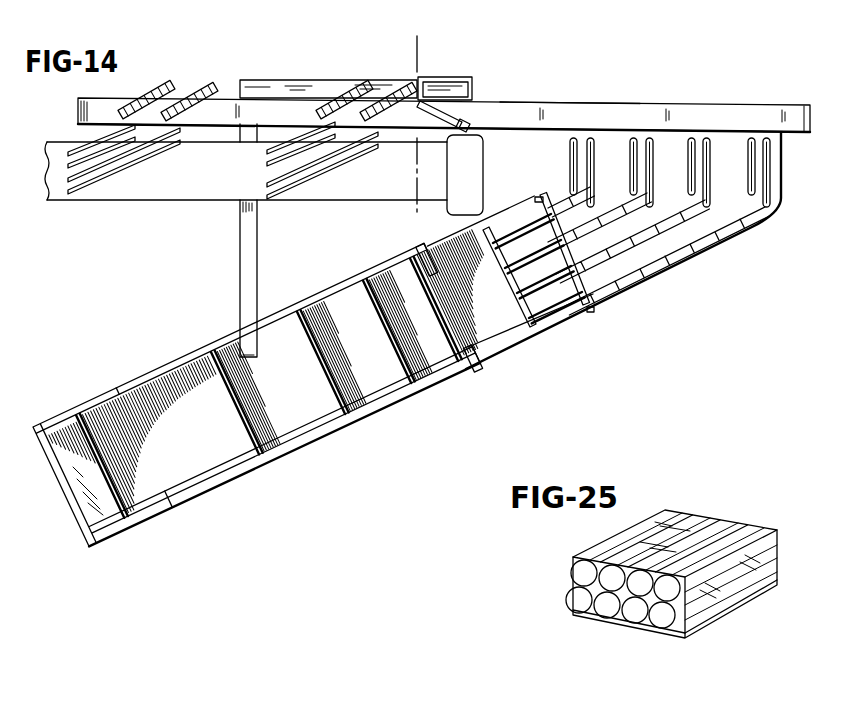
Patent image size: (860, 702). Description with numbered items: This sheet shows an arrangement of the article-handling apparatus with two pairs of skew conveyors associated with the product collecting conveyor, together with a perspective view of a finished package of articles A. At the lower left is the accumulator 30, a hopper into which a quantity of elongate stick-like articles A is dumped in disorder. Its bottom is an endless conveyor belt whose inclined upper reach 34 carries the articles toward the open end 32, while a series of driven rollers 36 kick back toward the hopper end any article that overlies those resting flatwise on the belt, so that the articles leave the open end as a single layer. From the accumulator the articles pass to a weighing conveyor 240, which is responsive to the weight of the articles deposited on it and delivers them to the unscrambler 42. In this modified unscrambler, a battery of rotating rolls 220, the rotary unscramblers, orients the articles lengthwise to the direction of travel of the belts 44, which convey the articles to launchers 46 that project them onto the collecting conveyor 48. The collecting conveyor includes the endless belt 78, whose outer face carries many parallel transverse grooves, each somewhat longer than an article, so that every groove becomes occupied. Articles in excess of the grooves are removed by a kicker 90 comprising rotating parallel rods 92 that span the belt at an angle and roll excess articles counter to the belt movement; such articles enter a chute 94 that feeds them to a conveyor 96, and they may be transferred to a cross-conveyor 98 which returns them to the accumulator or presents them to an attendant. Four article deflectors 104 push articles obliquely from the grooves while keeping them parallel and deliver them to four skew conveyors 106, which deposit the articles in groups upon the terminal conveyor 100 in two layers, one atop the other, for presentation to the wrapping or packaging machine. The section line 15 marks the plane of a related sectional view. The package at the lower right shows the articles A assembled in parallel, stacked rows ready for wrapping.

In FIG. 14, the section line 15- 15 is at (417, 125).
In FIG. 14, the accumulator 30 is at (225, 492).
In FIG. 14, the open end 32 is at (463, 377).
In FIG. 14, the inclined upper reach 34 is at (363, 398).
In FIG. 14, the driven rollers 36 is at (263, 452).
In FIG. 14, the unscrambler 42 is at (687, 270).
In FIG. 14, the belts 44 is at (562, 212).
In FIG. 14, the launchers 46 is at (632, 176).
In FIG. 14, the collecting conveyor 48 is at (730, 101).
In FIG. 14, the endless belt 78 is at (566, 104).
In FIG. 14, the kicker 90 is at (467, 125).
In FIG. 14, the rotating parallel rods 92 is at (470, 117).
In FIG. 14, the chute 94 is at (460, 77).
In FIG. 14, the conveyor 96 is at (328, 86).
In FIG. 14, the cross-conveyor 98 is at (240, 240).
In FIG. 14, the terminal conveyor 100 is at (130, 197).
In FIG. 14, the article deflector 104 is at (157, 92).
In FIG. 14, the skew conveyors 106 is at (93, 133).
In FIG. 14, the rotating rolls 220 is at (536, 260).
In FIG. 14, the weighing conveyor 240 is at (499, 358).
In FIG. 25, the articles A is at (712, 533).